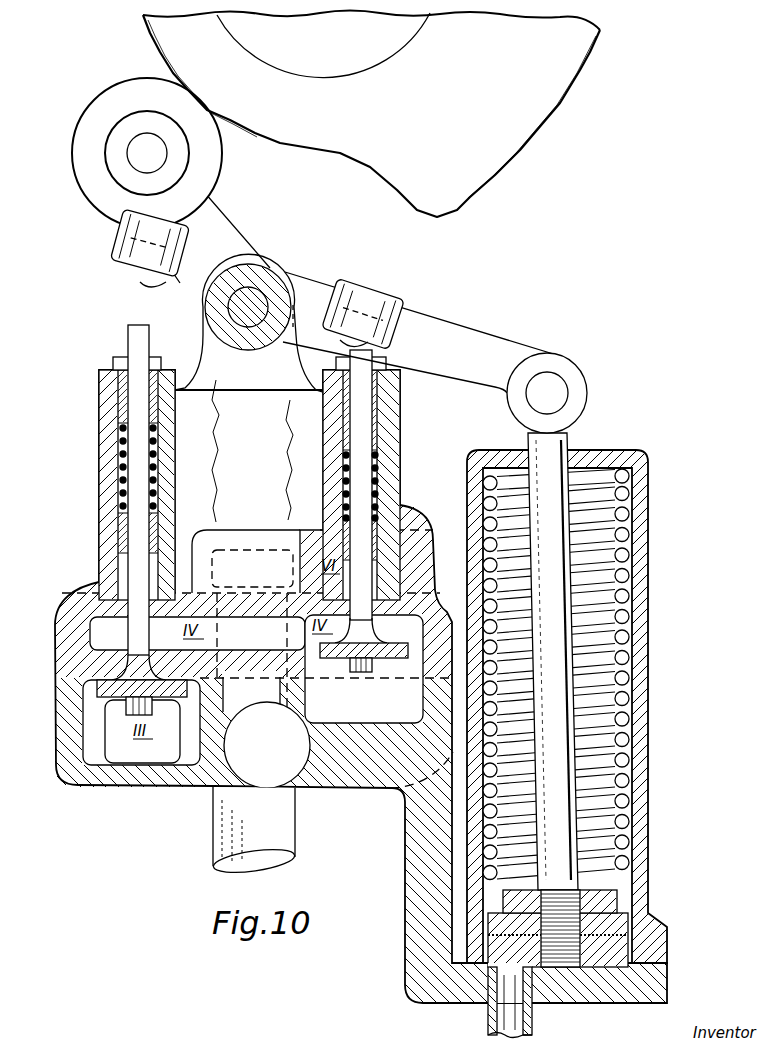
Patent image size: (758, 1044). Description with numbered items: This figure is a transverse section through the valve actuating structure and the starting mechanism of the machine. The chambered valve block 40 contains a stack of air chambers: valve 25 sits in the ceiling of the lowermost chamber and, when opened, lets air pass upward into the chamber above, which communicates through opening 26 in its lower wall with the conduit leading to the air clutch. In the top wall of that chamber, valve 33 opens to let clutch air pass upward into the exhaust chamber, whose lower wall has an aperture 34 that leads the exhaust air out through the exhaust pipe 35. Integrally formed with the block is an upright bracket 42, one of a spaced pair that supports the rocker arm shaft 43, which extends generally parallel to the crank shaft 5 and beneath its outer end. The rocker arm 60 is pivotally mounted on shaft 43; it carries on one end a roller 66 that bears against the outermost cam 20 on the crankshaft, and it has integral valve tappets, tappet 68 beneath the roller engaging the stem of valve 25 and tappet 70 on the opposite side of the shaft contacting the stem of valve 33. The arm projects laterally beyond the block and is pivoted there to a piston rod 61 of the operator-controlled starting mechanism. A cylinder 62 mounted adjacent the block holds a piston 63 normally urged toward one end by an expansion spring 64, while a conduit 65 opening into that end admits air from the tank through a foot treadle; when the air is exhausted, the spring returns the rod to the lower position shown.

The crank shaft 5 is at (405, 32).
The outermost cam 20 is at (488, 148).
The valve 25 is at (142, 585).
The opening 26 is at (272, 690).
The valve 33 is at (368, 564).
The aperture 34 is at (235, 592).
The exhaust pipe 35 is at (267, 841).
The chambered valve block 40 is at (62, 712).
The upright bracket 42 is at (226, 437).
The rocker arm shaft 43 is at (262, 300).
The rocker arm 60 is at (213, 255).
The piston rod 61 is at (550, 448).
The cylinder 62 is at (643, 695).
The piston 63 is at (635, 913).
The expansion spring 64 is at (623, 756).
The conduit 65 is at (535, 1014).
The roller 66 is at (88, 170).
The valve tappet 68 is at (168, 276).
The valve tappet 70 is at (330, 347).